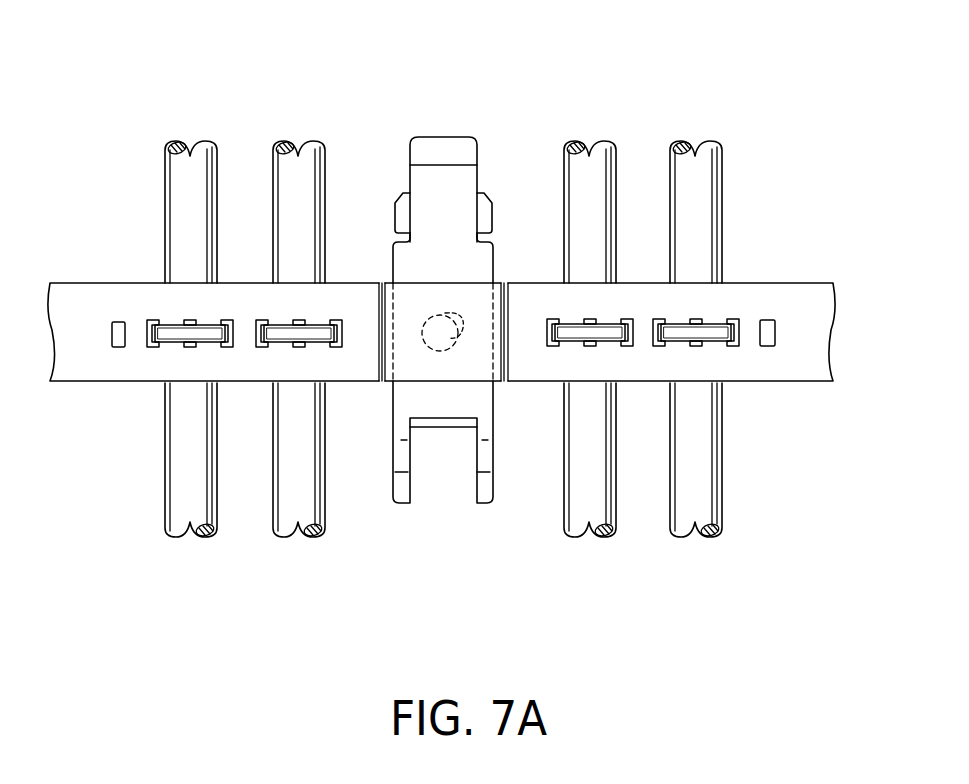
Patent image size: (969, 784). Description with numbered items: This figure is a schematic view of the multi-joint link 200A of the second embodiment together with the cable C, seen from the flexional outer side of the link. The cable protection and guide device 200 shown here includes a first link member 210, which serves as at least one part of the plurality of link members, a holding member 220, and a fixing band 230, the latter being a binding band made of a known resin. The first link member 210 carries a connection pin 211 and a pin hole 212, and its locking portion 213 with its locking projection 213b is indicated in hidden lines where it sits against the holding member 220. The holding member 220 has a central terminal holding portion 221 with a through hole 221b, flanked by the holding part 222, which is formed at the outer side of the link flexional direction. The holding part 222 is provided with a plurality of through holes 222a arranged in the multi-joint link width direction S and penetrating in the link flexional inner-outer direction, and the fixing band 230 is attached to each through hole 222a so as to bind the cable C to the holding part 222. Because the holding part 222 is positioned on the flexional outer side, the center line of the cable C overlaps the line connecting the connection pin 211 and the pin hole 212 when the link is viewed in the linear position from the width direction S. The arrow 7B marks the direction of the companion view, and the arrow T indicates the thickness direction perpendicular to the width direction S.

The multi-joint link 200A is at (412, 296).
The cable protection and guide device 200 is at (459, 321).
The first link member 210 is at (466, 134).
The connection pin 211 is at (485, 207).
The pin hole 212 is at (489, 470).
The locking portion 213 is at (541, 214).
The locking projection 213b is at (455, 312).
The holding member 220 is at (441, 348).
The terminal holding portion of carrier 221 is at (482, 330).
The through hole of carrier 221b is at (432, 317).
The holding part 222 is at (240, 368).
The through hole 222a is at (120, 322).
The fixing band 230 is at (172, 346).
The cable C is at (180, 195).
The arrow 7B is at (443, 552).
The thickness direction T is at (825, 495).
The multi-joint link width direction S is at (817, 640).